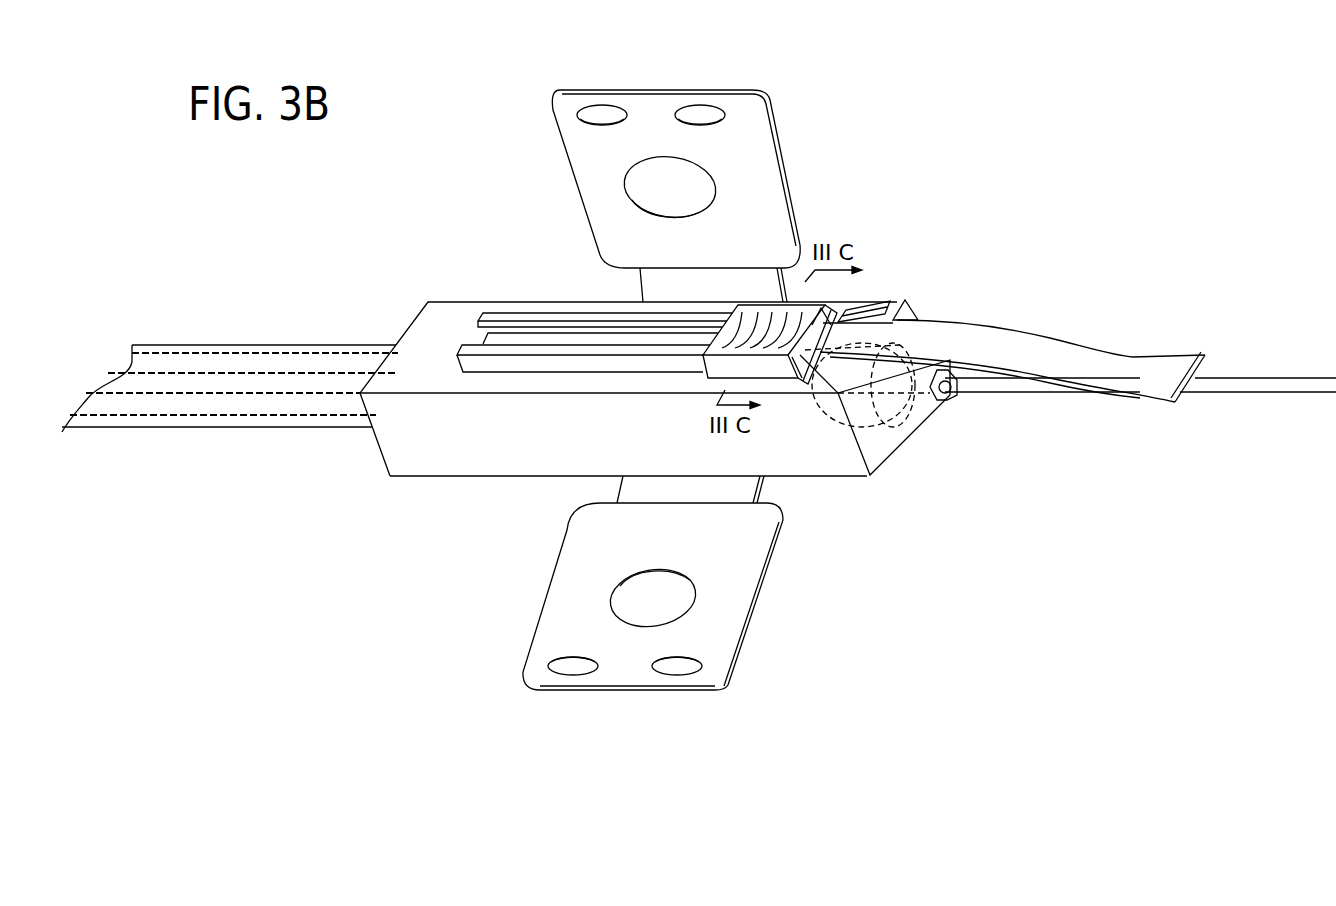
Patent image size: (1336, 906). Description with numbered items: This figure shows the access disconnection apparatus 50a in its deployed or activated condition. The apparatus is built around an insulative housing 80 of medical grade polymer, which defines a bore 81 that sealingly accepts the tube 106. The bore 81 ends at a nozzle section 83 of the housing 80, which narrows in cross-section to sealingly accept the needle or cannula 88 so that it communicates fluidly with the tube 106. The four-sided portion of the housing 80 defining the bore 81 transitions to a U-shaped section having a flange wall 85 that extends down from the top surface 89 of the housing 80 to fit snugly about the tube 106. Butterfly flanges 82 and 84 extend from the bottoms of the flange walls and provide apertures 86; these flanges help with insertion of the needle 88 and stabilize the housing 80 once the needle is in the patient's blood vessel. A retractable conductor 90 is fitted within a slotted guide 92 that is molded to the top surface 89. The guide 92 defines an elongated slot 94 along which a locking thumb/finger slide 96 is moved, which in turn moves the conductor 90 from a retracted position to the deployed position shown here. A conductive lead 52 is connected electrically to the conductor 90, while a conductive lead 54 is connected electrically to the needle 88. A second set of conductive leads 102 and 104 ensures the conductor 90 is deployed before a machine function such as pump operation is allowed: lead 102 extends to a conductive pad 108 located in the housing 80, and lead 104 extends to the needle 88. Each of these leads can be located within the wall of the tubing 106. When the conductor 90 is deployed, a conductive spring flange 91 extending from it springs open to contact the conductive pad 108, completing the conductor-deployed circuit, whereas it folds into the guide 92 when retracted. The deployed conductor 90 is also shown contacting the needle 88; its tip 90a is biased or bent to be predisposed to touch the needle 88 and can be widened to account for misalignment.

The access disconnection apparatus 50a is at (902, 126).
The conductive lead 52 is at (332, 373).
The conductive lead 54 is at (255, 417).
The insulative housing 80 is at (424, 293).
The bore 81 is at (847, 427).
The butterfly flange 82 is at (706, 553).
The nozzle section 83 is at (922, 428).
The butterfly flange 84 is at (738, 251).
The flange wall 85 is at (535, 457).
The apertures 86 is at (612, 106).
The needle or cannula 88 is at (1233, 378).
The top surface 89 is at (411, 385).
The retractable conductor 90 is at (1047, 345).
The tip 90a is at (1167, 402).
The conductive spring flange 91 is at (891, 306).
The slotted guide 92 is at (530, 362).
The elongated slot 94 is at (614, 337).
The locking thumb/finger slide 96 is at (720, 367).
The conductive lead 102 is at (253, 352).
The conductive lead 104 is at (178, 397).
The tube 106 is at (182, 345).
The conductive pad 108 is at (868, 308).